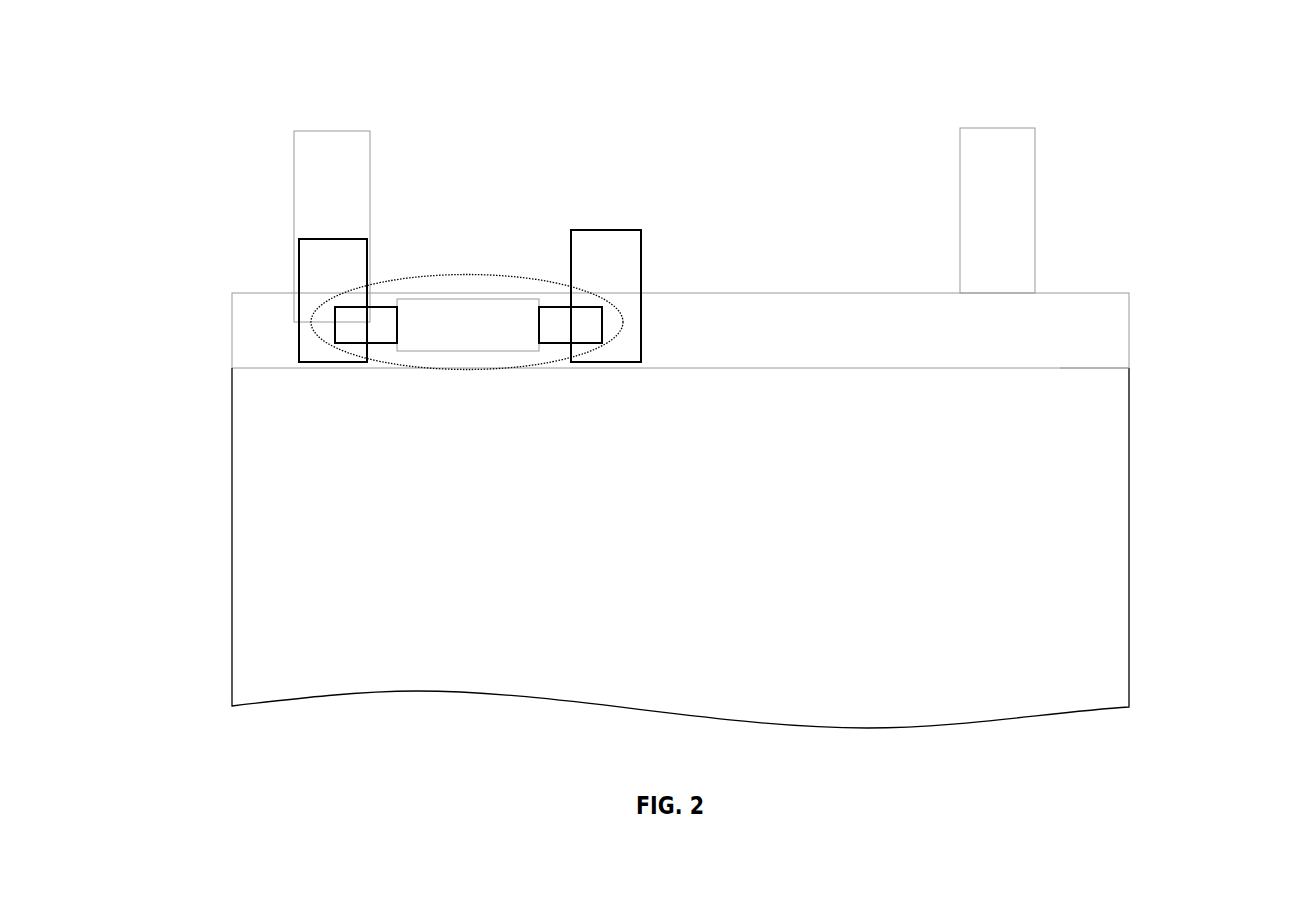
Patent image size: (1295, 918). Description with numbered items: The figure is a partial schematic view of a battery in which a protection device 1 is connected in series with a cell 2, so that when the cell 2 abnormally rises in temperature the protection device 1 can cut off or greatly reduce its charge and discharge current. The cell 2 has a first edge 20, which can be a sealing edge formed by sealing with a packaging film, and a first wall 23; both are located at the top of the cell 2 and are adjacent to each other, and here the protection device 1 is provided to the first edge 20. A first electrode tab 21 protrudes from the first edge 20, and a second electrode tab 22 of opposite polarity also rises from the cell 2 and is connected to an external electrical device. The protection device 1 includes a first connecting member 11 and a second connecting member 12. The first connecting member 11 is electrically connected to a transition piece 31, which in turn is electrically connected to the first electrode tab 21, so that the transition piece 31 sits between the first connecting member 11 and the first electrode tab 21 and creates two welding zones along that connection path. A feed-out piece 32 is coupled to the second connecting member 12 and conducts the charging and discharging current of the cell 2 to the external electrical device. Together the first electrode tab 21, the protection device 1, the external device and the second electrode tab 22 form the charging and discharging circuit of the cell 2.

The protection device 1 is at (475, 250).
The first connecting member 11 is at (385, 323).
The second connecting member 12 is at (560, 323).
The cell 2 is at (255, 603).
The first edge 20 is at (249, 352).
The first electrode tab 21 is at (318, 155).
The second electrode tab 22 is at (1007, 208).
The first wall 23 is at (1072, 368).
The transition piece 31 is at (330, 273).
The feed-out piece 32 is at (620, 258).